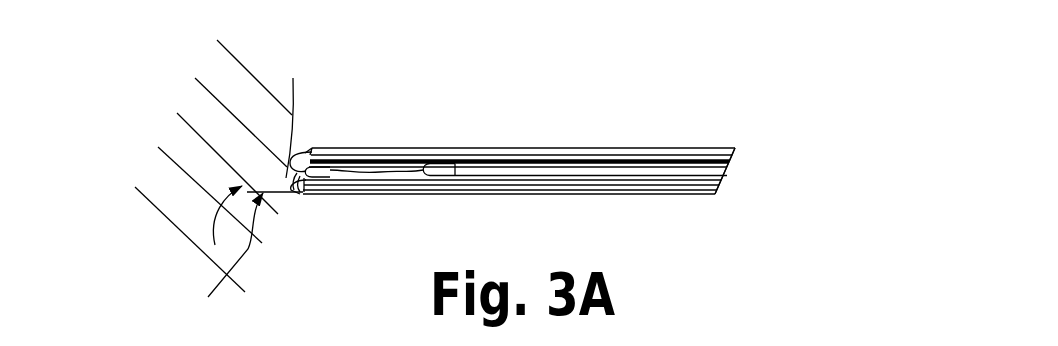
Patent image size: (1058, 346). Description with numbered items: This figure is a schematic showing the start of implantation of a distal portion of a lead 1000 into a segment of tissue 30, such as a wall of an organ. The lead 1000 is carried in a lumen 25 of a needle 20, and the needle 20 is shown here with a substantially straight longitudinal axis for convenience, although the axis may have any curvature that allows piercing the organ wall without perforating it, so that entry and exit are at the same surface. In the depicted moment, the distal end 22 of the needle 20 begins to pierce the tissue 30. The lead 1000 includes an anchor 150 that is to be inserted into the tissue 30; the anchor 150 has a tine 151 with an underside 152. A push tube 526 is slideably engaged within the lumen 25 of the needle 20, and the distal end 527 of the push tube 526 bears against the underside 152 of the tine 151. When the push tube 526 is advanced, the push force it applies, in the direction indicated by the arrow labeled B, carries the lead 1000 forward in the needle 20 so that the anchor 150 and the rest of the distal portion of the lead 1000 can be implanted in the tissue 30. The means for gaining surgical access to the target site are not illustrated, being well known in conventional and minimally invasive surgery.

The tissue 30 is at (251, 165).
The distal end 22 is at (213, 171).
The needle 20 is at (519, 139).
The push tube 526 is at (640, 152).
The lumen 25 is at (415, 158).
The anchor 150 is at (262, 209).
The tine 151 is at (294, 192).
The underside 152 is at (301, 192).
The distal end 527 is at (306, 194).
The lead 1000 is at (734, 179).